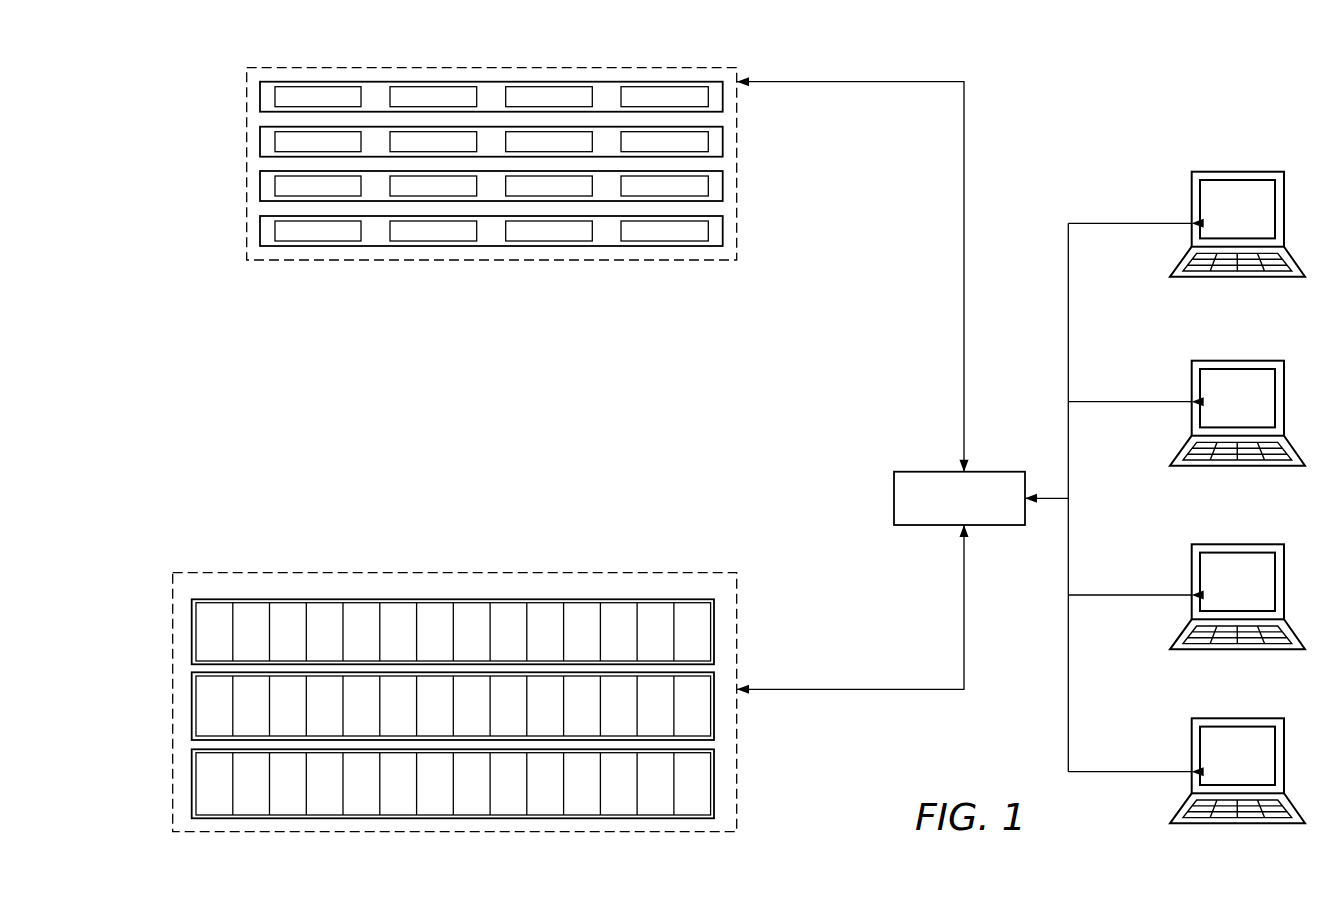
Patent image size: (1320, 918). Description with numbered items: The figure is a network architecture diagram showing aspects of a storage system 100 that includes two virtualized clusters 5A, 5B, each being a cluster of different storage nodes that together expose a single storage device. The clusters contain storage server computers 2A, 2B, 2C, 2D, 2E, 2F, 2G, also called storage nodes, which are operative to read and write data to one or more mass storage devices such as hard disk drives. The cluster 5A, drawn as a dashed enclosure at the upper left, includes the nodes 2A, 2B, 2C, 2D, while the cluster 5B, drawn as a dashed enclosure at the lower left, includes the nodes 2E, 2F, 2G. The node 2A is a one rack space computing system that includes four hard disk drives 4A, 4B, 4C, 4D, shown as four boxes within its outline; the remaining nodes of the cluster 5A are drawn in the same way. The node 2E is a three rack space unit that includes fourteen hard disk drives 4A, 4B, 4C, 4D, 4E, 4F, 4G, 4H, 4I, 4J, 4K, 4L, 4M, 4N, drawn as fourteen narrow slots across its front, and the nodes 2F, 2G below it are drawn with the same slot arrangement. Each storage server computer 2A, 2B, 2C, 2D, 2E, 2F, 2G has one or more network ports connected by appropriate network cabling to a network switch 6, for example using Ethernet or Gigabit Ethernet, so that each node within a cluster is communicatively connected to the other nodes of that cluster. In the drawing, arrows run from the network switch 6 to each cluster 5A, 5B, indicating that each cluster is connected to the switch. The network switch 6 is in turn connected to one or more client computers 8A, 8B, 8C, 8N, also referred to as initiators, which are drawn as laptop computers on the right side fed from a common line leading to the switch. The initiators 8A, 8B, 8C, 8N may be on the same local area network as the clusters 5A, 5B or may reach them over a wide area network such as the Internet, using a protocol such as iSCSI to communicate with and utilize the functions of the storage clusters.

The storage system 100 is at (1068, 88).
The virtualized cluster 5A is at (492, 153).
The virtualized cluster 5B is at (457, 691).
The storage server computer 2A is at (723, 97).
The storage server computer 2B is at (723, 142).
The storage server computer 2C is at (723, 186).
The storage server computer 2D is at (723, 232).
The storage server computer 2E is at (714, 615).
The storage server computer 2F is at (714, 718).
The storage server computer 2G is at (714, 783).
The hard disk drive 4A is at (204, 643).
The hard disk drive 4B is at (240, 643).
The hard disk drive 4C is at (277, 643).
The hard disk drive 4D is at (654, 108).
The hard disk drive 4E is at (350, 643).
The hard disk drive 4F is at (387, 643).
The hard disk drive 4G is at (446, 643).
The hard disk drive 4H is at (483, 643).
The hard disk drive 4I is at (500, 643).
The hard disk drive 4J is at (534, 643).
The hard disk drive 4K is at (571, 643).
The hard disk drive 4L is at (630, 643).
The hard disk drive 4M is at (644, 643).
The hard disk drive 4N is at (681, 643).
The network switch 6 is at (959, 488).
The client computer 8A is at (1237, 214).
The client computer 8B is at (1237, 403).
The client computer 8C is at (1237, 586).
The client computer 8N is at (1237, 760).